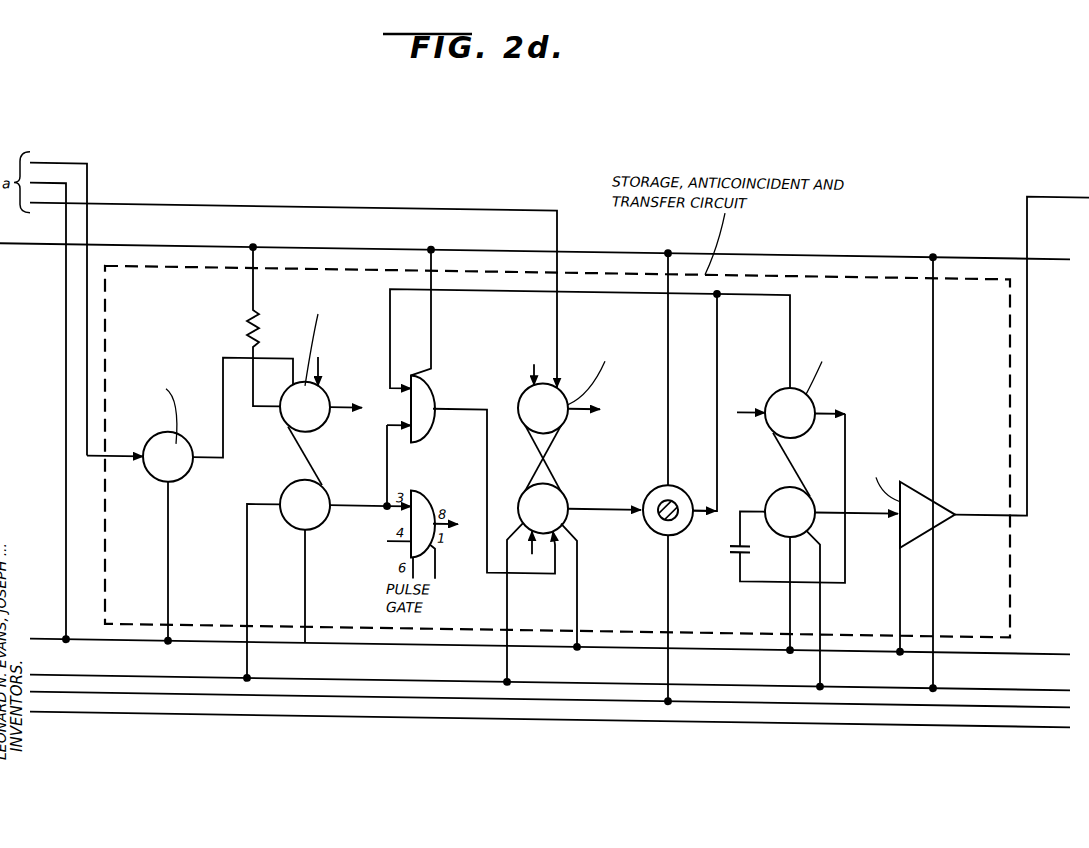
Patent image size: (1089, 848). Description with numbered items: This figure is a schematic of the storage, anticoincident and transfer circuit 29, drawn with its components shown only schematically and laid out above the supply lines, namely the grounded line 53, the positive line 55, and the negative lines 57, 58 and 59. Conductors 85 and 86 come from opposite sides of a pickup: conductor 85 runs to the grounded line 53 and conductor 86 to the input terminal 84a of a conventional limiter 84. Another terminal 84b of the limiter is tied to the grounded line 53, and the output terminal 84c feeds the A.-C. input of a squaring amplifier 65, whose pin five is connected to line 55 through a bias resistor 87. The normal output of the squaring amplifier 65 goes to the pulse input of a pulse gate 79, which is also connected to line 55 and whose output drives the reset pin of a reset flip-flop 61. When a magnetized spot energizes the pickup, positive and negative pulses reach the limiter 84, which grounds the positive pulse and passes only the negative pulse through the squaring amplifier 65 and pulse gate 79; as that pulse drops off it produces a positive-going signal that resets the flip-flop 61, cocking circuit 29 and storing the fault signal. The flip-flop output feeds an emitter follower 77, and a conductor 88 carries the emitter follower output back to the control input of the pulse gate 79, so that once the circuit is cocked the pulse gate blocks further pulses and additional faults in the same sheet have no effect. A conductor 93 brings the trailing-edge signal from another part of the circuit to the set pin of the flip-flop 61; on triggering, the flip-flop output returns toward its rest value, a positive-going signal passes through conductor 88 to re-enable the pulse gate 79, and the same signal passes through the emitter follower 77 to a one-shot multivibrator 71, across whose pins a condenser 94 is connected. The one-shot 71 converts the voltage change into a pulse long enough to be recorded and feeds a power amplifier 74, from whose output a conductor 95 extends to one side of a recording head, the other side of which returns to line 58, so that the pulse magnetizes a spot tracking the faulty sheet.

The storage, anticoincident and transfer circuit 29 is at (876, 298).
The grounded line 53 is at (346, 650).
The line at positive D.-C. potential 55 is at (1074, 241).
The line at negative D.-C. potential 57 is at (428, 678).
The line at negative D.-C. potential 58 is at (428, 697).
The line at negative D.-C. potential 59 is at (428, 716).
The reset flip-flop 61 is at (520, 418).
The squaring amplifier 65 is at (322, 424).
The one-shot multivibrator 71 is at (812, 390).
The power amplifier 74 is at (937, 512).
The emitter follower 77 is at (642, 488).
The pulse gate 79 is at (436, 386).
The limiter 84 is at (164, 432).
The input terminal of the limiter 84a is at (150, 468).
The terminal of the limiter 84b is at (168, 482).
The output terminal of the limiter 84c is at (190, 455).
The conductor 85 is at (68, 183).
The conductor 86 is at (68, 163).
The bias resistor 87 is at (257, 334).
The conductor 88 is at (610, 291).
The conductor 93 is at (68, 203).
The condenser 94 is at (734, 548).
The conductor 95 is at (1074, 181).